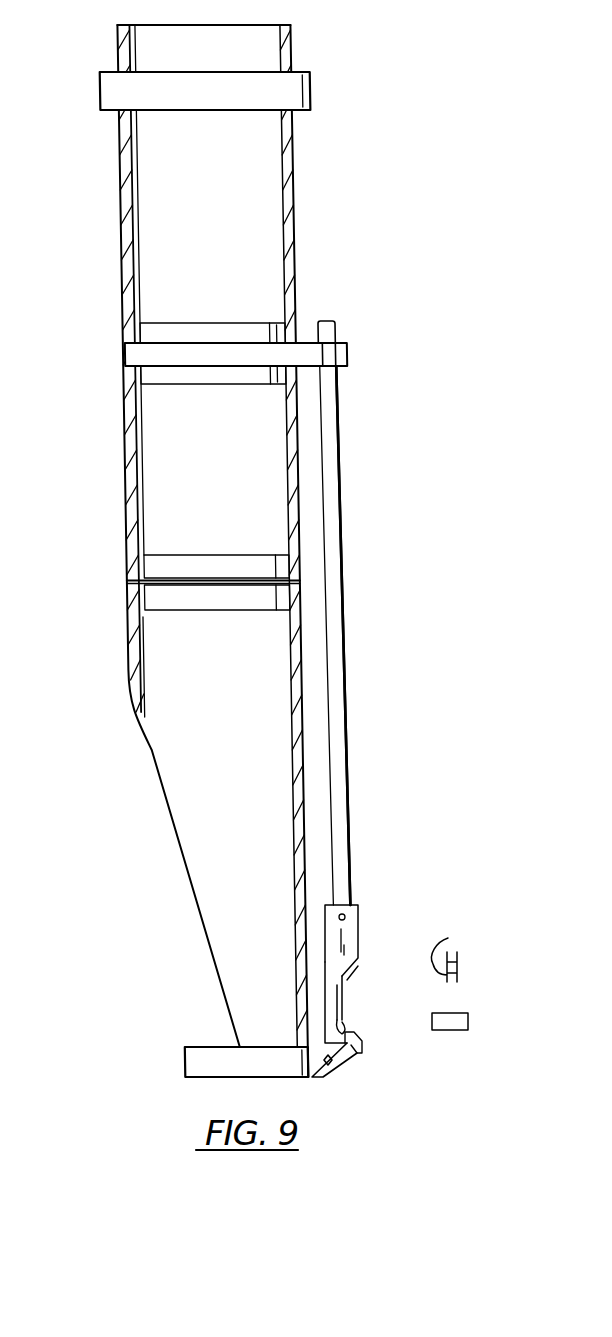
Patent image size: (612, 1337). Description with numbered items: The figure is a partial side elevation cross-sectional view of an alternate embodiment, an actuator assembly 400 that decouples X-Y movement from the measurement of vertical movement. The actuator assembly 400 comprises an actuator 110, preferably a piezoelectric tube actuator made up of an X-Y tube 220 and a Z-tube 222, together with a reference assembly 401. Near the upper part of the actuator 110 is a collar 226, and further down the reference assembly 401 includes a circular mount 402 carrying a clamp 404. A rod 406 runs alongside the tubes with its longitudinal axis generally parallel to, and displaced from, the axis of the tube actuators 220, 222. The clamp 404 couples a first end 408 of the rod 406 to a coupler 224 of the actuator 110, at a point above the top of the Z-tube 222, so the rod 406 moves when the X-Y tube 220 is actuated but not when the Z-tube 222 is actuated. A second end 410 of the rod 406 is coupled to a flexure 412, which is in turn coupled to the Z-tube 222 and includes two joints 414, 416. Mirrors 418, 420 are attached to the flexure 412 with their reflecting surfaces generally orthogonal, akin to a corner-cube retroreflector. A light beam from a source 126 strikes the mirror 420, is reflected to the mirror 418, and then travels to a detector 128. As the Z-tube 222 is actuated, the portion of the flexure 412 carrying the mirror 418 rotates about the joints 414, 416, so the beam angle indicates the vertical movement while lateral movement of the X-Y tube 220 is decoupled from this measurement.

The actuator assembly 400 is at (433, 32).
The actuator 110 is at (407, 163).
The upper collar band 226 is at (312, 98).
The X-Y tube 220 is at (295, 263).
The Z-tube 222 is at (127, 480).
The coupler 224 is at (288, 322).
The circular mount 402 is at (128, 352).
The clamp 404 is at (350, 351).
The first end 408 is at (348, 326).
The reference assembly 401 is at (372, 552).
The rod 406 is at (348, 707).
The second end 410 is at (374, 901).
The flexure 412 is at (344, 926).
The mirror 420 is at (358, 967).
The joint 414 is at (341, 1026).
The mirror 418 is at (350, 1032).
The joint 416 is at (354, 1058).
The source 126 is at (454, 948).
The detector 128 is at (458, 1030).